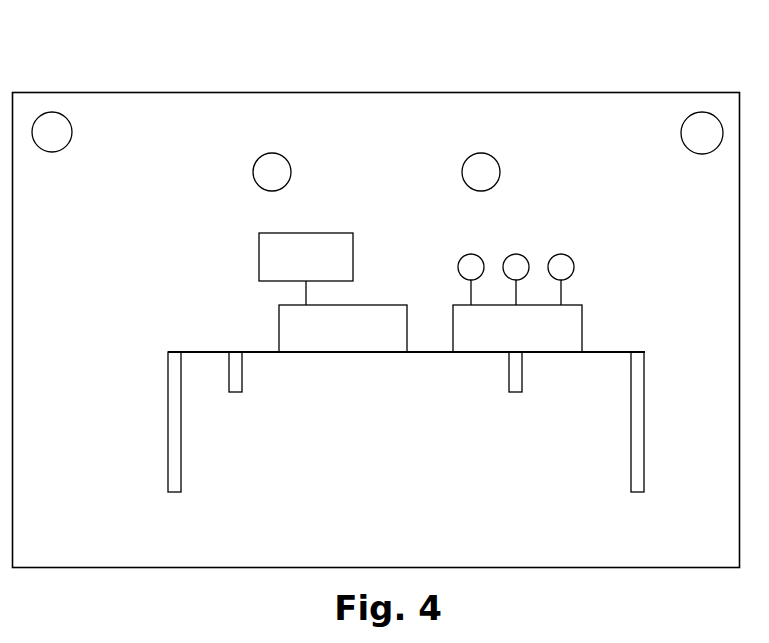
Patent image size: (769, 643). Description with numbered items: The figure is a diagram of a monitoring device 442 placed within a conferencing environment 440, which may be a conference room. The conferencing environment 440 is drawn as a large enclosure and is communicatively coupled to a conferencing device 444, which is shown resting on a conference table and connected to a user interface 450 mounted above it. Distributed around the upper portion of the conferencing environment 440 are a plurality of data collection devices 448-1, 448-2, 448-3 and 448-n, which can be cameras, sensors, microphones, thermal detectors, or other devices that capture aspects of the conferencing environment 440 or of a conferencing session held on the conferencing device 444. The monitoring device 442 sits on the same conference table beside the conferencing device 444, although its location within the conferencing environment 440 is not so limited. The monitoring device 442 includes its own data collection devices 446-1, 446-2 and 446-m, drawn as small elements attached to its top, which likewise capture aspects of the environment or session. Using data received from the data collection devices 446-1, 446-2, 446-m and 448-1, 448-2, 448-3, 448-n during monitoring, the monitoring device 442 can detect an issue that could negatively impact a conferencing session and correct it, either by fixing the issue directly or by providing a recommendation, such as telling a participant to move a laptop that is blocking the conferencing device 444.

The conferencing environment 440 is at (645, 92).
The monitoring device 442 is at (582, 328).
The conferencing device 444 is at (383, 305).
The data collection device 446-1 is at (471, 254).
The data collection device 446-2 is at (516, 254).
The data collection device 446-m is at (561, 254).
The data collection device 448-1 is at (72, 133).
The data collection device 448-2 is at (272, 153).
The data collection device 448-3 is at (481, 153).
The data collection device 448-n is at (681, 133).
The user interface 450 is at (333, 233).